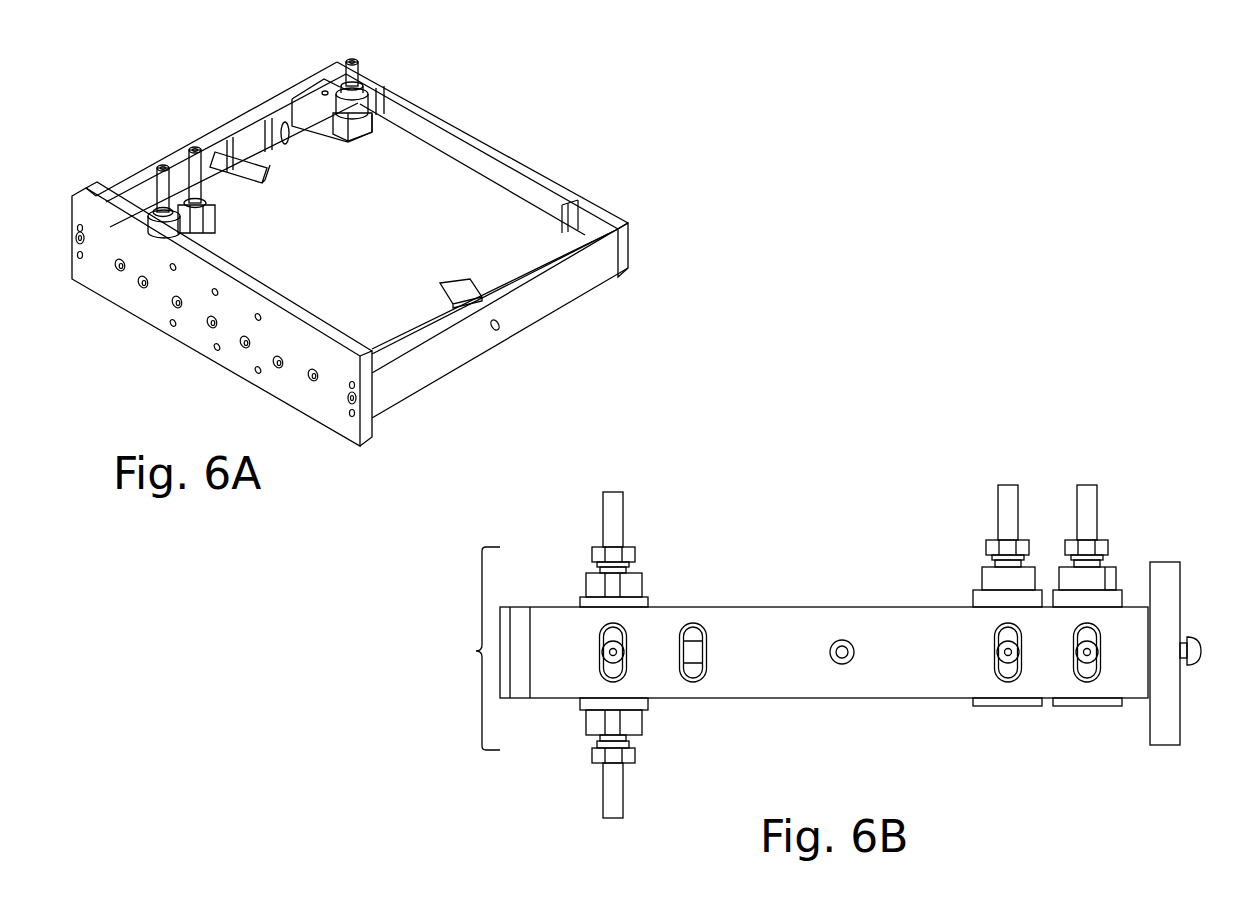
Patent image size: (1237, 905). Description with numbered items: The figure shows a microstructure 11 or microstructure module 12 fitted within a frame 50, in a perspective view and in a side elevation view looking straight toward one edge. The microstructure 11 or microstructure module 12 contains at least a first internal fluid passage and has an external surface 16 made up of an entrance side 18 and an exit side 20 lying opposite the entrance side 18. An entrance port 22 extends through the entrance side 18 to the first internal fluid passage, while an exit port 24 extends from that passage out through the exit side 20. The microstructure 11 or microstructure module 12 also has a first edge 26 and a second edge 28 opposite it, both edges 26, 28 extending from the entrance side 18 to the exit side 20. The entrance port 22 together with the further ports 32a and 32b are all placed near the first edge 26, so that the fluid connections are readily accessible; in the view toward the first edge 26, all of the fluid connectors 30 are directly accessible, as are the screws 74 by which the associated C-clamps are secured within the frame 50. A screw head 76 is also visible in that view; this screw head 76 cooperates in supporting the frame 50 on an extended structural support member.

In FIG. 6A, the microstructure 11 is at (208, 216).
In FIG. 6A, the microstructure module 12 is at (322, 244).
In FIG. 6A, the external surface 16 is at (287, 153).
In FIG. 6B, the external surface 16 is at (476, 651).
In FIG. 6A, the entrance side 18 is at (468, 244).
In FIG. 6B, the entrance side 18 is at (556, 576).
In FIG. 6B, the exit side 20 is at (562, 722).
In FIG. 6A, the entrance port 22 is at (349, 78).
In FIG. 6B, the entrance port 22 is at (590, 532).
In FIG. 6B, the exit port 24 is at (589, 779).
In FIG. 6A, the first edge 26 is at (200, 120).
In FIG. 6A, the second edge 28 is at (372, 230).
In FIG. 6A, the fluid connectors 30 is at (358, 78).
In FIG. 6B, the fluid connectors 30 is at (617, 528).
In FIG. 6B, the port 32a is at (1008, 474).
In FIG. 6B, the port 32b is at (1087, 474).
In FIG. 6A, the frame 50 is at (458, 345).
In FIG. 6B, the frame 50 is at (783, 668).
In FIG. 6B, the screws 74 is at (617, 652).
In FIG. 6B, the screw head 76 is at (1201, 651).